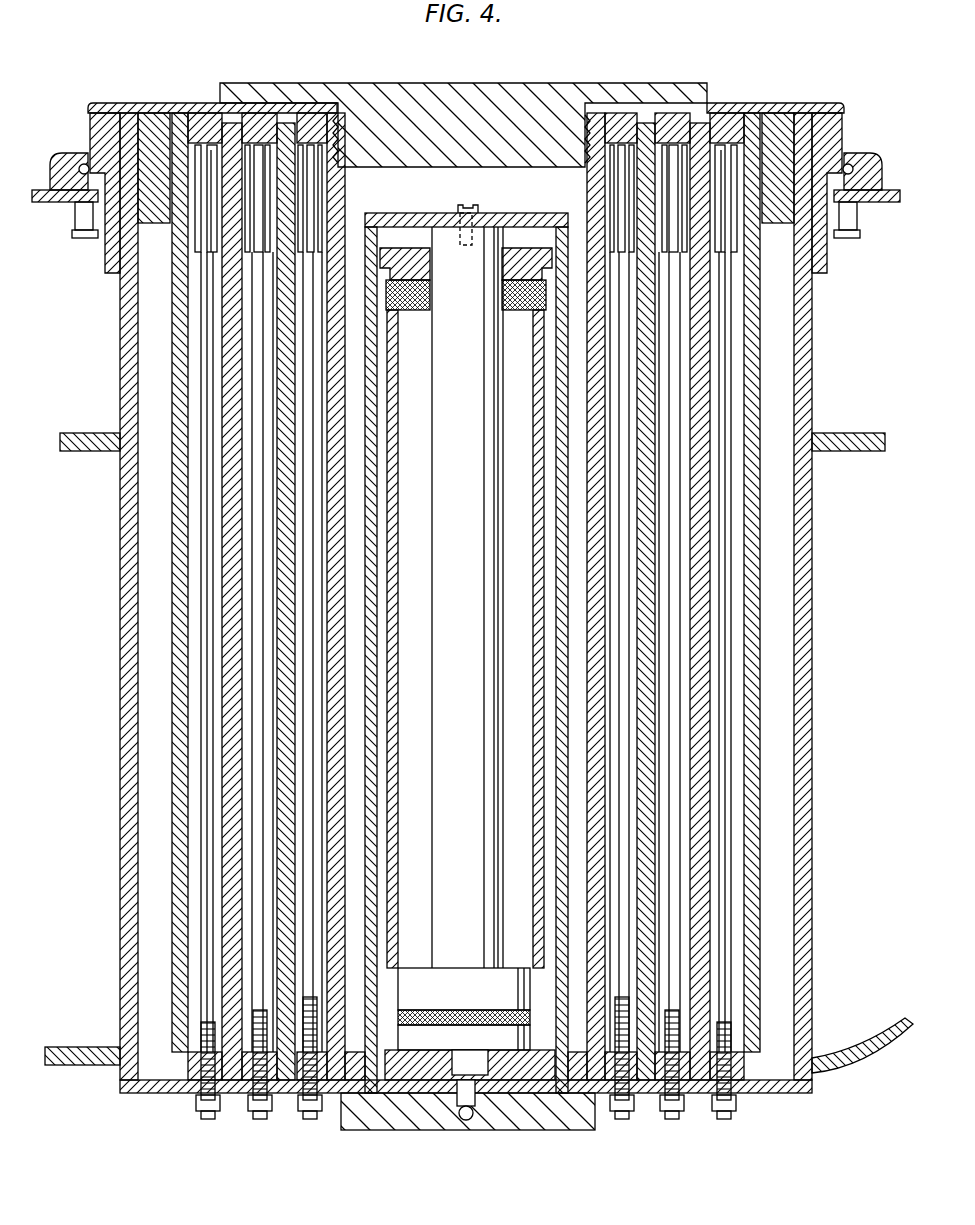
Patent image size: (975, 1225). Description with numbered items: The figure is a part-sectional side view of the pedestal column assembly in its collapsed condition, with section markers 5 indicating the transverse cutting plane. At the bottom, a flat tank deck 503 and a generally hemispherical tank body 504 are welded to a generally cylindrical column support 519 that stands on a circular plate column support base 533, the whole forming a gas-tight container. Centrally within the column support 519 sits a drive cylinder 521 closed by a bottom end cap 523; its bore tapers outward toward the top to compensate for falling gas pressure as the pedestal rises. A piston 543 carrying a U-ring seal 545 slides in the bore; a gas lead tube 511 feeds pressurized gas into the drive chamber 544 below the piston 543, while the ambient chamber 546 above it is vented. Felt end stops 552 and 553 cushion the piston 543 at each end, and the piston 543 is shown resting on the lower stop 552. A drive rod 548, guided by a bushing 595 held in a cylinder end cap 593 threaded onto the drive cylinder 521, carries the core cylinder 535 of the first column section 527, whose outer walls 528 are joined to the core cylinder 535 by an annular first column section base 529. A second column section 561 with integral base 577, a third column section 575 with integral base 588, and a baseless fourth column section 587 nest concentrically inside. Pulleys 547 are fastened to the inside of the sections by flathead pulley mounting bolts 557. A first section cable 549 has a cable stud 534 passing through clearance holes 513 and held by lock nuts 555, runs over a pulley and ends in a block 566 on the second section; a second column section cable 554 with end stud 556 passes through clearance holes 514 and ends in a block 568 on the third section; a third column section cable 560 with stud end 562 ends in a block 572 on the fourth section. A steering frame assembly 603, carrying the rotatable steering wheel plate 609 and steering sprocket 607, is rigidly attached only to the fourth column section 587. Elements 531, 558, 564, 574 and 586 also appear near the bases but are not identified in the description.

The section line 5- 5 is at (90, 103).
The tank deck 503 is at (840, 433).
The tank body 504 is at (102, 1068).
The gas lead tube 511 is at (468, 1122).
The clearance holes 513 is at (192, 1030).
The clearance holes 514 is at (232, 1025).
The column support 519 is at (120, 318).
The drive cylinder 521 is at (505, 768).
The bottom end cap 523 is at (583, 1130).
The first column section 527 is at (170, 632).
The outer walls 528 is at (175, 547).
The first column section base 529 is at (255, 1118).
The washer 531 is at (632, 1100).
The column support base 533 is at (152, 1094).
The cable stud 534 is at (202, 1025).
The core cylinder 535 is at (462, 205).
The piston 543 is at (490, 1105).
The drive chamber 544 is at (470, 1072).
The seal 545 is at (505, 1075).
The ambient chamber 546 is at (418, 766).
The pulleys 547 is at (195, 240).
The drive rod 548 is at (476, 629).
The first section cable 549 is at (200, 400).
The lower end stop 552 is at (470, 1084).
The upper end stop 553 is at (430, 300).
The second column section cable 554 is at (250, 347).
The lock nuts 555 is at (198, 1115).
The end stud 556 is at (237, 1120).
The pulley mounting bolts 557 is at (285, 190).
The washer 558 is at (262, 1115).
The third column section cable 560 is at (305, 396).
The second column section 561 is at (230, 472).
The stud end 562 is at (325, 1052).
The nut 564 is at (303, 1100).
The block 566 is at (212, 1030).
The block 568 is at (365, 962).
The block 572 is at (355, 1100).
The end block 574 is at (325, 990).
The third column section 575 is at (355, 557).
The second column section base 577 is at (605, 1095).
The seal 586 is at (565, 1095).
The fourth column section 587 is at (345, 594).
The third column section base 588 is at (338, 1100).
The cylinder end cap 593 is at (398, 248).
The bushing 595 is at (512, 248).
The steering frame assembly 603 is at (213, 100).
The steering sprocket 607 is at (80, 240).
The steering wheel plate 609 is at (50, 203).